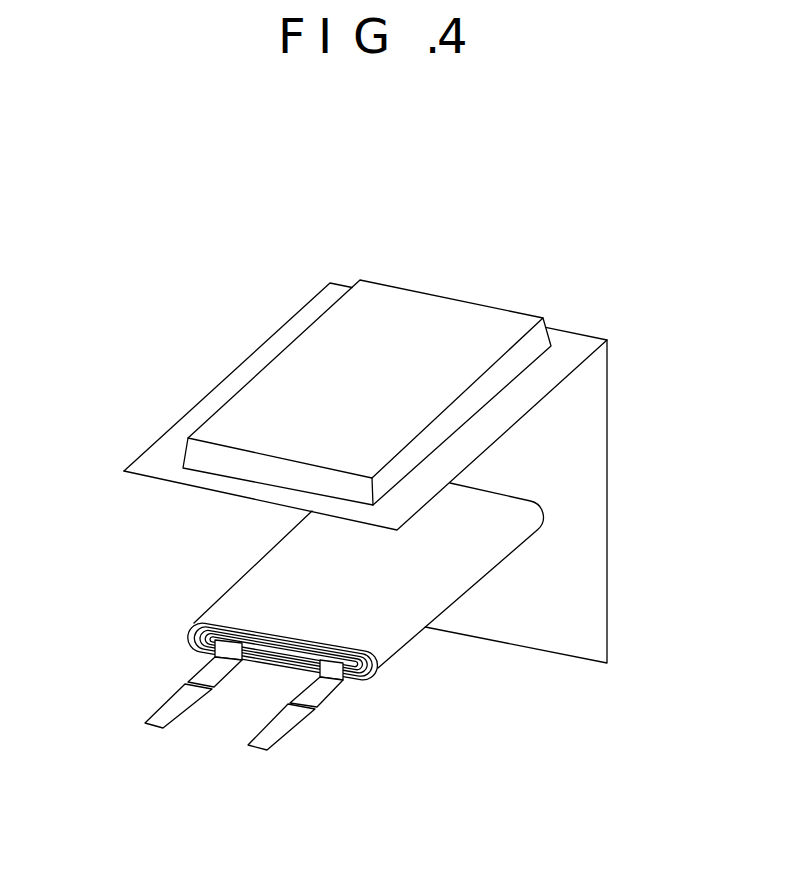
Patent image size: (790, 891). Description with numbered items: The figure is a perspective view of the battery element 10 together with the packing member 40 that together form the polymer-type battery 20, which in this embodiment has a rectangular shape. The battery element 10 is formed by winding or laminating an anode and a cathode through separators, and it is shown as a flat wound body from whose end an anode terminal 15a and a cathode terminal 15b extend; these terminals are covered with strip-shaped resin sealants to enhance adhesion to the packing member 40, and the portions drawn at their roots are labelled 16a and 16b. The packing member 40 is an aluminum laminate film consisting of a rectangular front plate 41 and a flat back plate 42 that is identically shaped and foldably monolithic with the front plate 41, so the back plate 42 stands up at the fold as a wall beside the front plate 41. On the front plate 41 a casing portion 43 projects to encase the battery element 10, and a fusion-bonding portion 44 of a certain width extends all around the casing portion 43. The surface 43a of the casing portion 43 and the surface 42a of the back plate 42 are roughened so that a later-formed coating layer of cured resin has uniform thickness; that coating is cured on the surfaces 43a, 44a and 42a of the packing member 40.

The battery 20 is at (366, 240).
The packing member 40 is at (267, 365).
The front plate 41 is at (124, 471).
The back plate 42 is at (607, 663).
The surface 42a is at (588, 547).
The casing portion 43 is at (543, 317).
The surface 43a is at (330, 330).
The fusion-bonding portion 44 is at (601, 337).
The surface 44a is at (570, 358).
The battery element 10 is at (221, 598).
The anode terminal 15a is at (148, 714).
The cathode terminal 15b is at (248, 742).
The first electrode tab 16a is at (196, 667).
The second electrode tab 16b is at (294, 694).